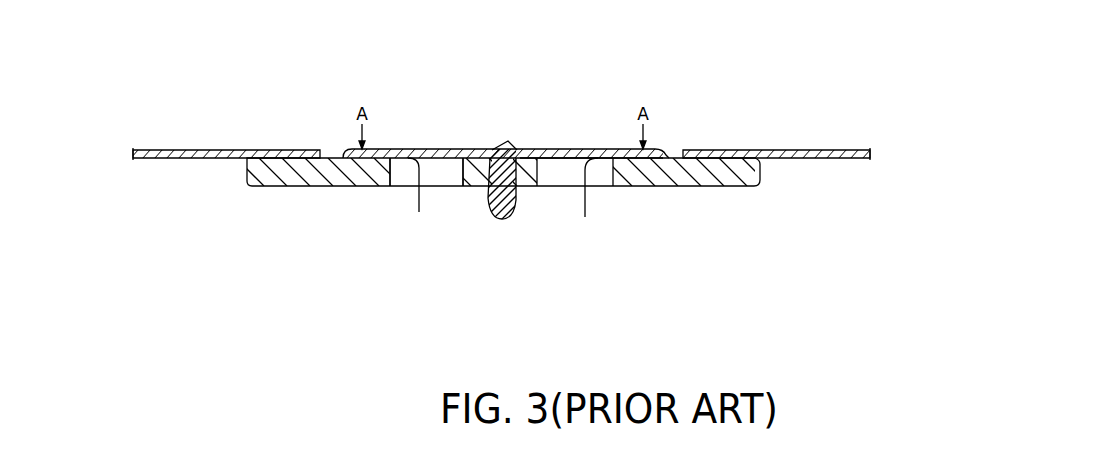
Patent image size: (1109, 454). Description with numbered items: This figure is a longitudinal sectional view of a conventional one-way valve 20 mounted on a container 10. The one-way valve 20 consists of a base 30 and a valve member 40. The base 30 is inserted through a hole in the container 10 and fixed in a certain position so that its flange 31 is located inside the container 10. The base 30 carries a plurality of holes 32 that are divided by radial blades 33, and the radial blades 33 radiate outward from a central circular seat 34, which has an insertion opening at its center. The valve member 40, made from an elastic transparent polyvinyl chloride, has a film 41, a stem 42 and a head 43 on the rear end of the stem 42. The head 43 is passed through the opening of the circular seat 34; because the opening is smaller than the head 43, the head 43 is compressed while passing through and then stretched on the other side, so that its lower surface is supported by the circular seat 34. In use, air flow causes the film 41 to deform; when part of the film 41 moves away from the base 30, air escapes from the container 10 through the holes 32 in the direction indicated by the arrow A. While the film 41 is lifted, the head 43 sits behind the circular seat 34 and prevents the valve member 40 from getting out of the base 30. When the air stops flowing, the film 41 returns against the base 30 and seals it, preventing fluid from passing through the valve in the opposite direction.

The container 10 is at (823, 150).
The one-way valve 20 is at (755, 80).
The base 30 is at (765, 180).
The flange 31 is at (700, 180).
The holes 32 is at (565, 175).
The radial blades 33 is at (598, 188).
The circular seat 34 is at (535, 150).
The valve member 40 is at (404, 148).
The film 41 is at (452, 148).
The stem 42 is at (503, 146).
The head 43 is at (493, 208).